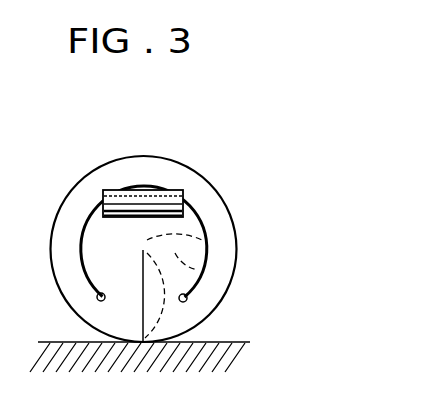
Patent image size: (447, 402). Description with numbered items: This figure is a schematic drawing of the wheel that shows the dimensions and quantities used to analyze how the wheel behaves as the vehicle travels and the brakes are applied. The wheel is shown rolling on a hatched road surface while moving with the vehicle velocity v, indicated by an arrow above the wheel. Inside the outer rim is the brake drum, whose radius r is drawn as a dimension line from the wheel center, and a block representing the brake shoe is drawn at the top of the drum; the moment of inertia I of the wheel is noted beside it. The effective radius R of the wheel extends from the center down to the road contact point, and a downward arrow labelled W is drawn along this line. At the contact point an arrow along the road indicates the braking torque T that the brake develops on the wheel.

The vehicle velocity v is at (167, 125).
The moment of inertia of the wheel I is at (244, 182).
The radius of the brake drum r is at (206, 250).
The effective radius of the wheel R is at (155, 296).
The weight W is at (132, 287).
The braking torque T is at (143, 342).